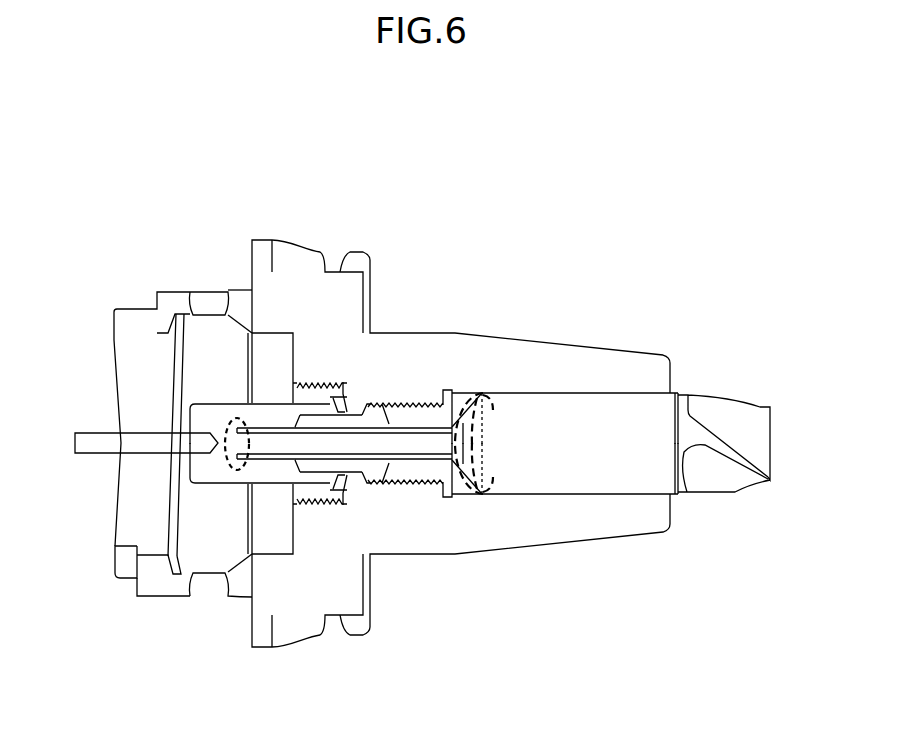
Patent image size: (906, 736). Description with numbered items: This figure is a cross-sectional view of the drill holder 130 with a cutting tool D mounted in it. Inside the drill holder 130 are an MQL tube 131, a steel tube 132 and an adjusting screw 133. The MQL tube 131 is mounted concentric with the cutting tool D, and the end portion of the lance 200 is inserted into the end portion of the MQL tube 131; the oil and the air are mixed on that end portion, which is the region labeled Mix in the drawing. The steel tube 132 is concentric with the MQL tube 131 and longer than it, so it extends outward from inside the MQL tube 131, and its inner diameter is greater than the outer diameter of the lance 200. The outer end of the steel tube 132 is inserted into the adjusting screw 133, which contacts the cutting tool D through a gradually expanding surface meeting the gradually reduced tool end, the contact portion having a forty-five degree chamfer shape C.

The drill holder 130 is at (456, 324).
The MQL tube 131 is at (245, 408).
The steel tube 132 is at (289, 443).
The adjusting screw 133 is at (425, 470).
The lance 200 is at (87, 447).
The chamfer shape C is at (470, 492).
The cutting tool D is at (731, 412).
The mixing region Mix is at (232, 466).